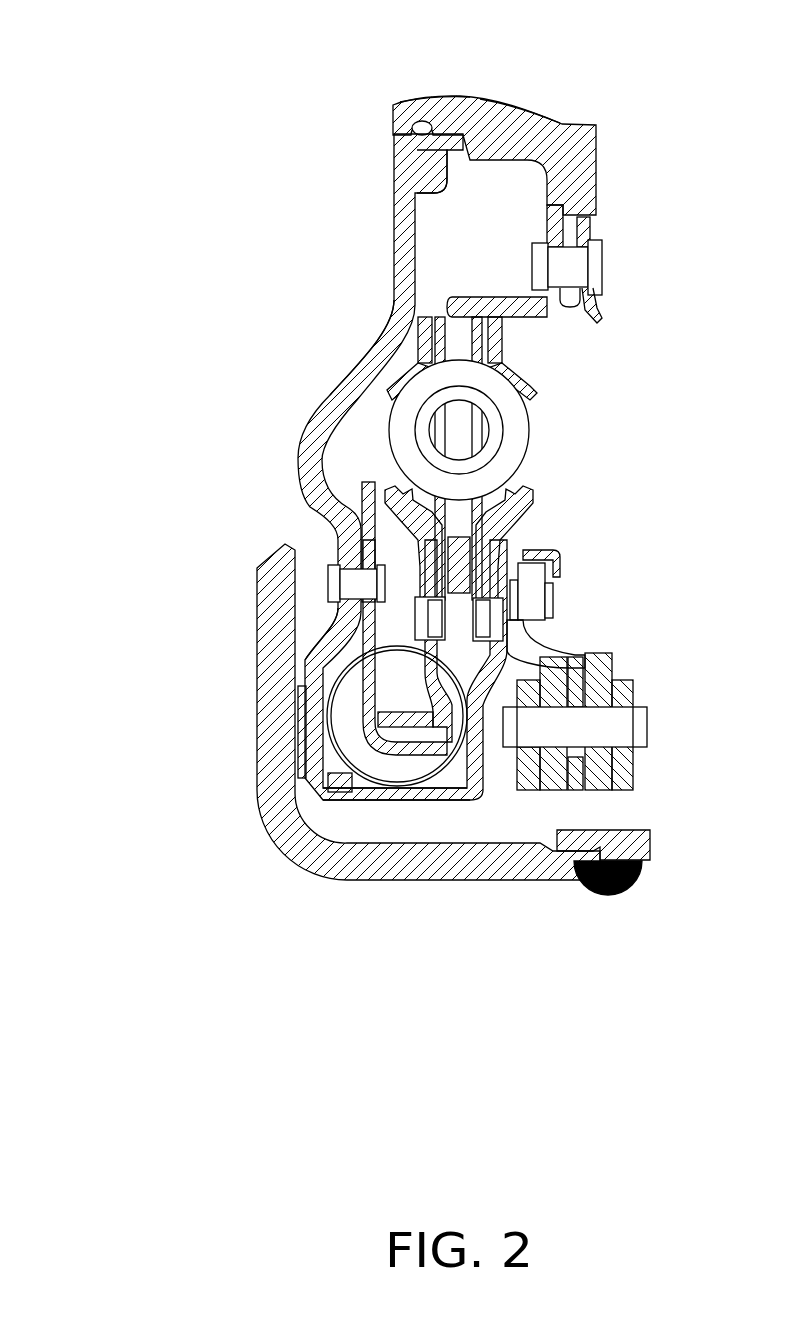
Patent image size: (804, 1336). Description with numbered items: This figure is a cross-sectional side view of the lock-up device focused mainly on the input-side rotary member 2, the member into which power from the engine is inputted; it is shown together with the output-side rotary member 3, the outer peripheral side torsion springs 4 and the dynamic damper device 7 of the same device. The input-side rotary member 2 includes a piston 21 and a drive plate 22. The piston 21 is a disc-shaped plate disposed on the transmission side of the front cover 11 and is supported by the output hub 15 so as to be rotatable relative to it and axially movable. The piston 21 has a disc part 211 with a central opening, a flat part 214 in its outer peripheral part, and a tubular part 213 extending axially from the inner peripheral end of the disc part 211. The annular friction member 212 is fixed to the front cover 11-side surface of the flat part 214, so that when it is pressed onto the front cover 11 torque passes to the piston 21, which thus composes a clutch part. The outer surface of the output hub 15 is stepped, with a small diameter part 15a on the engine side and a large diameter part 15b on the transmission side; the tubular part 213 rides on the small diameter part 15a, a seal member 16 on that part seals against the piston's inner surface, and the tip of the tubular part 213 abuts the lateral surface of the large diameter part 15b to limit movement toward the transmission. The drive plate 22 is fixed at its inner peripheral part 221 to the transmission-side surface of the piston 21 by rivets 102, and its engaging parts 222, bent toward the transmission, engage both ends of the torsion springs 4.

The input-side rotary member 2 is at (304, 618).
The output-side rotary member 3 is at (557, 512).
The outer peripheral side torsion spring 4 is at (361, 757).
The dynamic damper device 7 is at (649, 695).
The front cover 11 is at (243, 660).
The output hub 15 is at (612, 158).
The small diameter part 15a is at (433, 110).
The large diameter part 15b is at (503, 140).
The seal member 16 is at (423, 128).
The piston 21 is at (278, 468).
The drive plate 22 is at (347, 683).
The rivet 102 is at (327, 590).
The disc part 211 is at (342, 382).
The friction member 212 is at (300, 732).
The tubular part 213 is at (440, 183).
The flat part 214 is at (306, 796).
The inner peripheral part 221 is at (363, 542).
The engaging part 222 is at (403, 748).